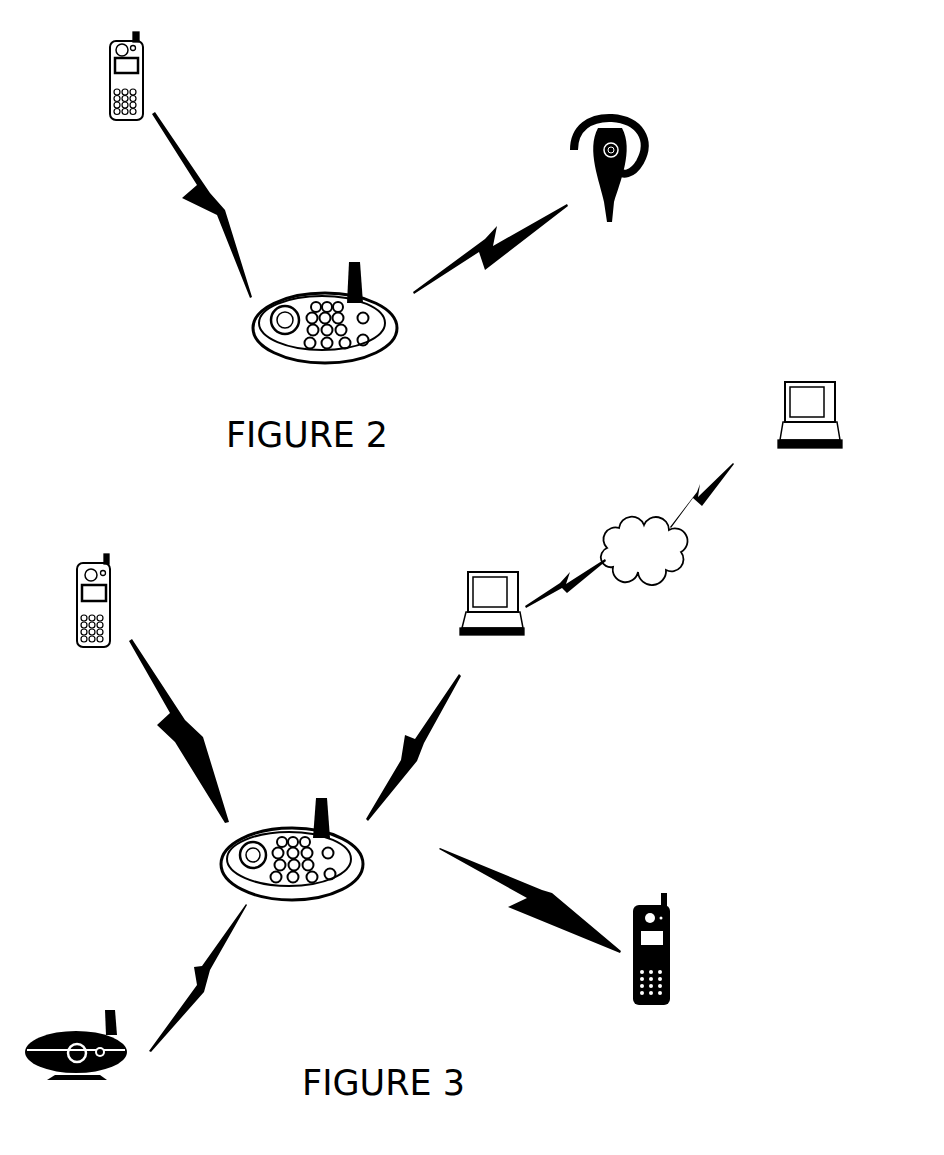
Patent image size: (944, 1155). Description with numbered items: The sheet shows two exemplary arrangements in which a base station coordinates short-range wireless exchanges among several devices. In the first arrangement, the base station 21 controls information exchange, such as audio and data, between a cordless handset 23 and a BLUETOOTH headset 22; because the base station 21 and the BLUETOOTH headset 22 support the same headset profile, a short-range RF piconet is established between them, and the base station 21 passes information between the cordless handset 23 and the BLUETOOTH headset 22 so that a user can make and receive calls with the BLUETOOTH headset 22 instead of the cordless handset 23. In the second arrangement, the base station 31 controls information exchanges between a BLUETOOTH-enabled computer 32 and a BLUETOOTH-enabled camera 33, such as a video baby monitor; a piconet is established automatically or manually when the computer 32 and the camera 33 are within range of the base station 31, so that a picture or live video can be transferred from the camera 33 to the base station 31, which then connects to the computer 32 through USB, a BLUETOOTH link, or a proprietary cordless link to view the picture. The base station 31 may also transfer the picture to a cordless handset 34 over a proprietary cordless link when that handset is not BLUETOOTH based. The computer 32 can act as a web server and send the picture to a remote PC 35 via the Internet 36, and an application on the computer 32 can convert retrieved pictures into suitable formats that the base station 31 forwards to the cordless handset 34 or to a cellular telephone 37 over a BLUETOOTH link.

In FIG. 2, the base station 21 is at (397, 347).
In FIG. 2, the BLUETOOTH headset 22 is at (616, 203).
In FIG. 2, the cordless handset 23 is at (116, 120).
In FIG. 3, the base station 31 is at (363, 863).
In FIG. 3, the BLUETOOTH-enabled computer 32 is at (494, 635).
In FIG. 3, the BLUETOOTH-enabled camera 33 is at (90, 1078).
In FIG. 3, the cordless handset 34 is at (670, 970).
In FIG. 3, the remote PC 35 is at (813, 449).
In FIG. 3, the Internet 36 is at (645, 574).
In FIG. 3, the cellular telephone 37 is at (110, 603).